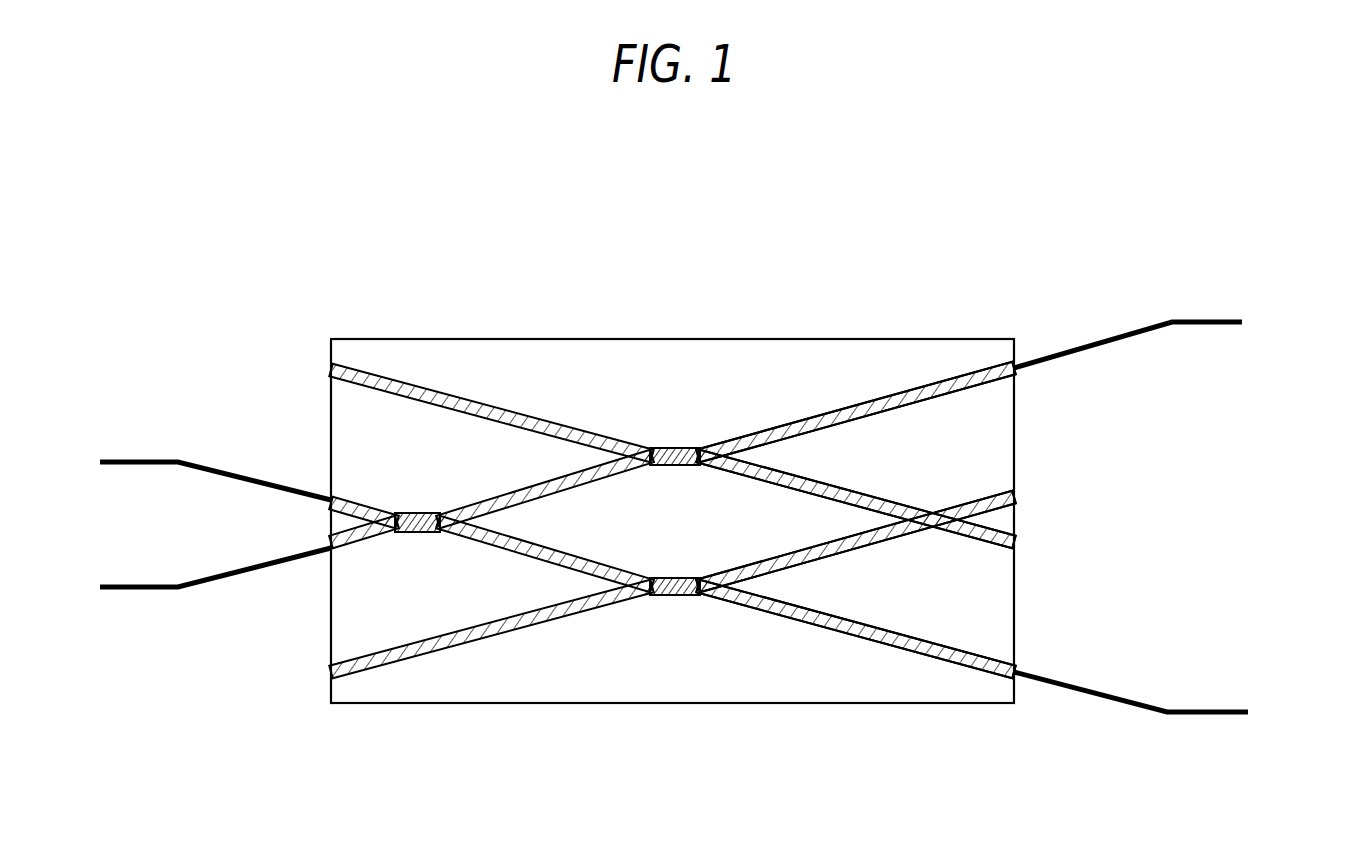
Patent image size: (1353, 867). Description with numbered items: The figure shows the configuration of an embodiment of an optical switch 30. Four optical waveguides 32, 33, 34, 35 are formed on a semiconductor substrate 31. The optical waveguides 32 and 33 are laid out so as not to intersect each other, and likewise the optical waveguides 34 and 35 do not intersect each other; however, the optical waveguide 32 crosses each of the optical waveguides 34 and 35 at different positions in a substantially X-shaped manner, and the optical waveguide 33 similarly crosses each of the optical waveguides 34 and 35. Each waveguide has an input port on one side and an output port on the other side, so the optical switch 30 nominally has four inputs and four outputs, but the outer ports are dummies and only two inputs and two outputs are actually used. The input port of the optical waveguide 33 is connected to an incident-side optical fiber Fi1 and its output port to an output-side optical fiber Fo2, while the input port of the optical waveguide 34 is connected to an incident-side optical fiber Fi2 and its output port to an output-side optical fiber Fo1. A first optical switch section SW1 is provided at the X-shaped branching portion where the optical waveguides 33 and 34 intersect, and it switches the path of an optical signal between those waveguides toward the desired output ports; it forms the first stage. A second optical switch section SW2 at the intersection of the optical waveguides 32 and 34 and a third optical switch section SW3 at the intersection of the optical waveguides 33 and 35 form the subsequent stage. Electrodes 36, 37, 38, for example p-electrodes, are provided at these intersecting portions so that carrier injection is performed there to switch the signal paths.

The optical switch 30 is at (371, 339).
The semiconductor substrate 31 is at (427, 683).
The optical waveguide 32 is at (977, 536).
The optical waveguide 33 is at (880, 645).
The optical waveguide 34 is at (868, 404).
The optical waveguide 35 is at (980, 498).
The electrode 36 is at (398, 511).
The electrode 37 is at (657, 447).
The electrode 38 is at (660, 597).
The first optical switch section SW1 is at (418, 511).
The second optical switch section SW2 is at (683, 447).
The third optical switch section SW3 is at (688, 597).
The incident-side optical fiber Fi1 is at (140, 462).
The incident-side optical fiber Fi2 is at (140, 587).
The output-side optical fiber Fo1 is at (1207, 322).
The output-side optical fiber Fo2 is at (1210, 712).